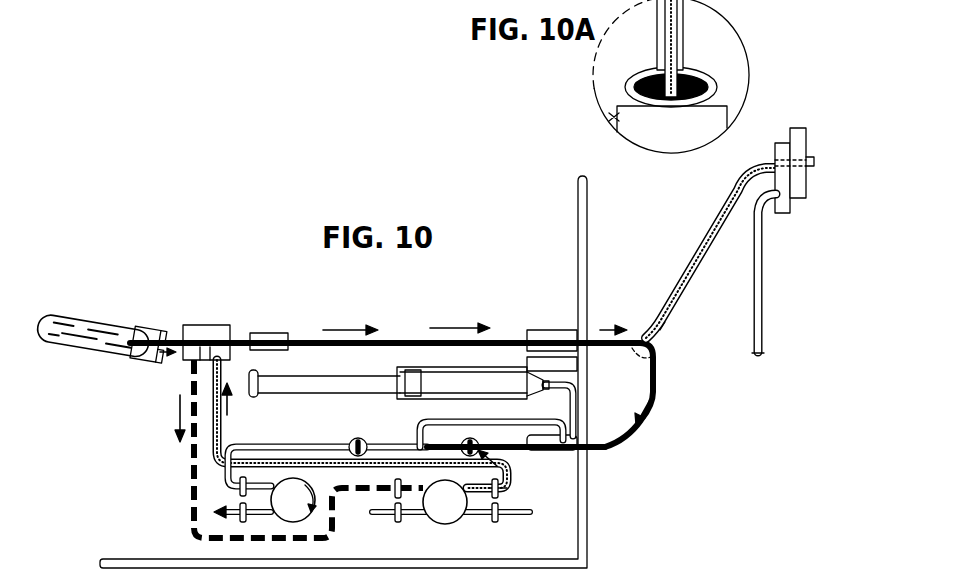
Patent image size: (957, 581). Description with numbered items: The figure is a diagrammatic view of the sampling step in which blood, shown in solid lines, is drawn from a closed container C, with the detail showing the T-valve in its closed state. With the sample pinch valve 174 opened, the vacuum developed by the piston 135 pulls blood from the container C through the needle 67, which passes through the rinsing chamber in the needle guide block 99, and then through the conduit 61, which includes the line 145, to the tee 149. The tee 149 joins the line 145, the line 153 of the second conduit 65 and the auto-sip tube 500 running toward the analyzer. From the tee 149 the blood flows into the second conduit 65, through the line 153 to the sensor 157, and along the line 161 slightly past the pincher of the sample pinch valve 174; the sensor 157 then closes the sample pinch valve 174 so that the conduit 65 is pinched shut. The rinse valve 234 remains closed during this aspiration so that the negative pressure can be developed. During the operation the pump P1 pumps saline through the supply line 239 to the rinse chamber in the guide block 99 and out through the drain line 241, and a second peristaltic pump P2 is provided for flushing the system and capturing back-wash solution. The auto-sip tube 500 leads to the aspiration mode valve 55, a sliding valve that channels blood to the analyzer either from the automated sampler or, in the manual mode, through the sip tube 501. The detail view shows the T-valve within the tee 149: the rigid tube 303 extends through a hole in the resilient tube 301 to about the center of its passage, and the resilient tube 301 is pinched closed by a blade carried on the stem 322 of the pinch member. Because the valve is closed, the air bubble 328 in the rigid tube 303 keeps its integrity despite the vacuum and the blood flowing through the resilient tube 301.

In FIG. 10, the closed container C is at (98, 324).
In FIG. 10, the needle guide block 99 is at (208, 325).
In FIG. 10, the needle 67 is at (240, 333).
In FIG. 10, the conduit 61 is at (397, 331).
In FIG. 10, the piston 135 is at (331, 375).
In FIG. 10, the rinse valve 234 is at (345, 439).
In FIG. 10, the second conduit 65 is at (420, 425).
In FIG. 10, the line 145 is at (590, 337).
In FIG. 10, the auto-sip tube 500 is at (690, 297).
In FIG. 10, the tee 149 is at (668, 336).
In FIG. 10A, the tee 149 is at (586, 66).
In FIG. 10, the sensor 157 is at (562, 437).
In FIG. 10, the line 153 is at (608, 450).
In FIG. 10, the line 161 is at (523, 462).
In FIG. 10, the sample pinch valve 174 is at (510, 473).
In FIG. 10, the supply line 239 is at (503, 490).
In FIG. 10, the drain line 241 is at (271, 449).
In FIG. 10, the aspiration mode valve 55 is at (796, 122).
In FIG. 10, the sip tube 501 is at (762, 292).
In FIG. 10A, the rigid tube 303 is at (680, 22).
In FIG. 10A, the air bubble 328 is at (682, 55).
In FIG. 10A, the resilient tube 301 is at (708, 68).
In FIG. 10A, the stem 322 is at (612, 118).
In FIG. 10, the pump P1 is at (451, 501).
In FIG. 10, the second peristaltic pump P2 is at (265, 500).